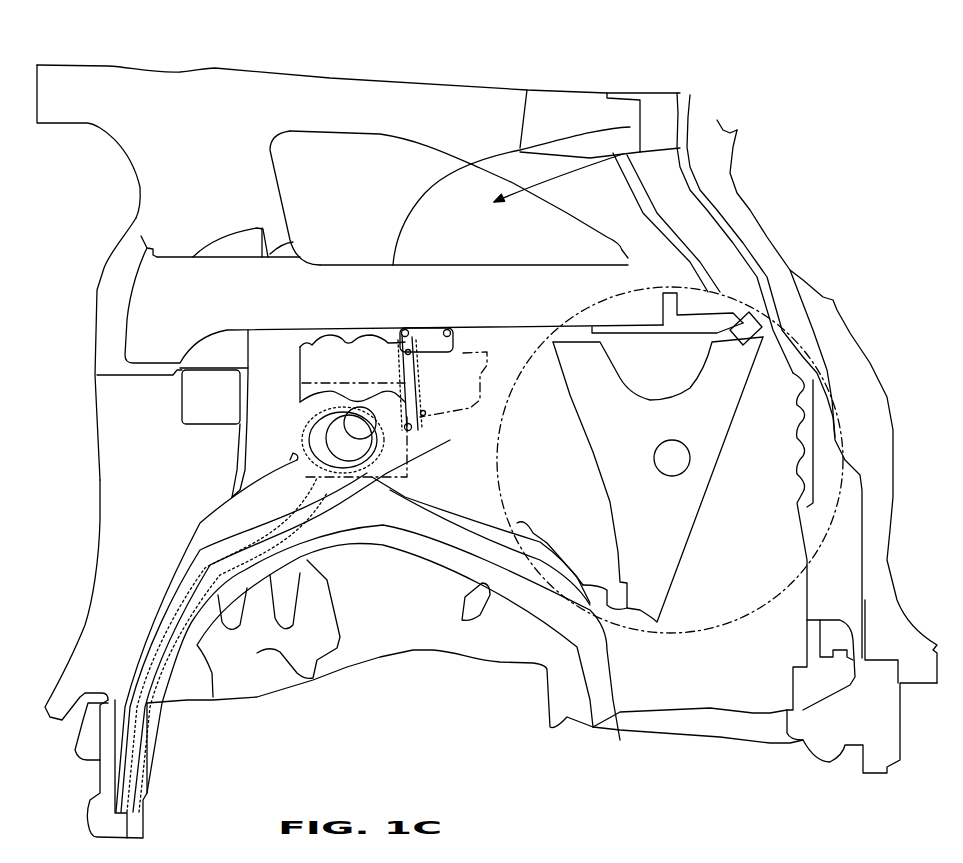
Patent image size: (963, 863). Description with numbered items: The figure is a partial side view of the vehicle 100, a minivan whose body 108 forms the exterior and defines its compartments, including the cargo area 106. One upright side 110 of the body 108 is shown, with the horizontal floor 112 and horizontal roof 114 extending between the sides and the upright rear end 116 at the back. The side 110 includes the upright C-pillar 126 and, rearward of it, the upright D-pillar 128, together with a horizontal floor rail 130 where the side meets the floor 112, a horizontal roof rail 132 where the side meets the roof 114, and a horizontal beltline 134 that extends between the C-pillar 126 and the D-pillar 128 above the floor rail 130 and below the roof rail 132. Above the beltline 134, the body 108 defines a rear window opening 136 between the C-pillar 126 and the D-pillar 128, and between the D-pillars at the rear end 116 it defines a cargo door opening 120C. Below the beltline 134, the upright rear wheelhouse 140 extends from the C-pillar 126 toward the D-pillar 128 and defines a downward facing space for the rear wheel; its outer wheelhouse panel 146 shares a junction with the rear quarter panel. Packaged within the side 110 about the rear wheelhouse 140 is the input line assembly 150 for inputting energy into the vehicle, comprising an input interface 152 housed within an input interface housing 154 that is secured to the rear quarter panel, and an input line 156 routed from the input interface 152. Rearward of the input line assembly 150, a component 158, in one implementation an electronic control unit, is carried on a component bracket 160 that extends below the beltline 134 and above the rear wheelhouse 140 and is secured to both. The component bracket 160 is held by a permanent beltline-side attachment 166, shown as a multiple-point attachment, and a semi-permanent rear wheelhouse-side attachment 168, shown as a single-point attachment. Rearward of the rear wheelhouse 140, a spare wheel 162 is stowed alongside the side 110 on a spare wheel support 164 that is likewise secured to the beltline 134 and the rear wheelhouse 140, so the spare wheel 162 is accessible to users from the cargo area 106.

The vehicle 100 is at (138, 188).
The cargo area 106 is at (208, 276).
The body 108 is at (133, 213).
The side 110 is at (139, 236).
The floor 112 is at (90, 827).
The roof 114 is at (110, 65).
The rear end 116 is at (765, 232).
The cargo door opening 120C is at (748, 202).
The C-pillar 126 is at (97, 290).
The D-pillar 128 is at (731, 177).
The floor rail 130 is at (90, 797).
The roof rail 132 is at (210, 70).
The beltline 134 is at (630, 127).
The rear window opening 136 is at (680, 148).
The rear wheelhouse 140 is at (227, 505).
The outer wheelhouse panel 146 is at (200, 523).
The input line assembly 150 is at (308, 463).
The input interface 152 is at (325, 427).
The input interface housing 154 is at (335, 383).
The input line 156 is at (297, 505).
The component 158 is at (463, 360).
The component bracket 160 is at (418, 395).
The spare wheel 162 is at (690, 285).
The spare wheel support 164 is at (757, 375).
The beltline-side attachment 166 is at (407, 330).
The rear wheelhouse-side attachment 168 is at (418, 430).